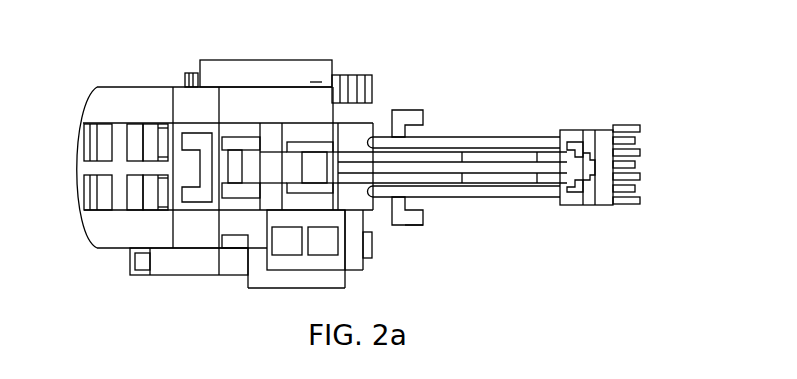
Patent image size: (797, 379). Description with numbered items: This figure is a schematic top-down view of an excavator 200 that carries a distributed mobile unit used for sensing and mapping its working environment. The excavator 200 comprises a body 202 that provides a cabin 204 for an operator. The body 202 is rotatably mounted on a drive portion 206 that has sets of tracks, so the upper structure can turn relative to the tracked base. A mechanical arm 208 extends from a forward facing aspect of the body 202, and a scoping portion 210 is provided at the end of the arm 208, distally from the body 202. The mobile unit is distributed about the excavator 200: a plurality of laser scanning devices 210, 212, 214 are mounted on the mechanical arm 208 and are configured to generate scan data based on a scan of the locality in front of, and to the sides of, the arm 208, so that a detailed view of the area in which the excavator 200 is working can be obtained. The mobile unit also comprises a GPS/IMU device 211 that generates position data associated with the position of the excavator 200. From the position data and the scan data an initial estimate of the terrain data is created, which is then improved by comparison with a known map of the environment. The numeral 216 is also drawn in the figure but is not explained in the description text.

The excavator 200 is at (594, 64).
The body 202 is at (283, 85).
The cabin 204 is at (243, 123).
The drive portion 206 is at (372, 88).
The mechanical arm 208 is at (557, 200).
The scoping portion 210 is at (614, 128).
The GPS/IMU device 211 is at (322, 82).
The laser scanning device 212 is at (423, 115).
The laser scanning device 214 is at (425, 213).
The bracket tab 216 is at (428, 225).